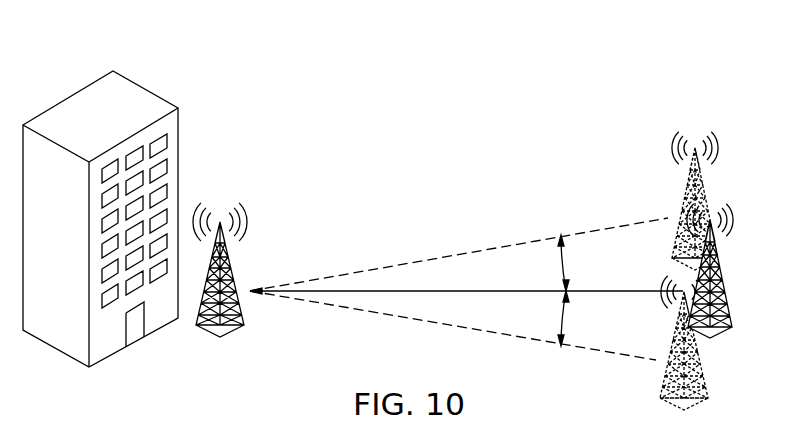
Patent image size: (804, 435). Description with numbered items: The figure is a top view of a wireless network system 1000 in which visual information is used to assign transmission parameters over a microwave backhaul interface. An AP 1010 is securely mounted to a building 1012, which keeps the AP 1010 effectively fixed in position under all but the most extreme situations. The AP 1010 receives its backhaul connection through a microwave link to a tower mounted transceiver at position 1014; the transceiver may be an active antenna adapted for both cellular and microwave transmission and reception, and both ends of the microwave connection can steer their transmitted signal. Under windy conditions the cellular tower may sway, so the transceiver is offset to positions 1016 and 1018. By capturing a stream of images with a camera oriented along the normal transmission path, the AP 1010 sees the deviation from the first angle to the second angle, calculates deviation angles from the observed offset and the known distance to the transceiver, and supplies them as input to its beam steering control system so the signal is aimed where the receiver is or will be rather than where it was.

The system 1000 is at (648, 90).
The AP 1010 is at (217, 334).
The building 1012 is at (90, 97).
The position of tower mounted transceiver 1014 is at (729, 290).
The offset position of transceiver 1016 is at (704, 188).
The offset position of transceiver 1018 is at (708, 370).